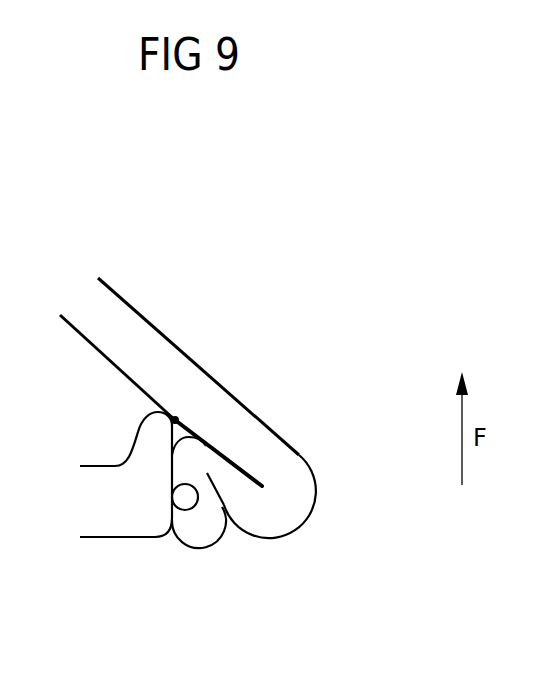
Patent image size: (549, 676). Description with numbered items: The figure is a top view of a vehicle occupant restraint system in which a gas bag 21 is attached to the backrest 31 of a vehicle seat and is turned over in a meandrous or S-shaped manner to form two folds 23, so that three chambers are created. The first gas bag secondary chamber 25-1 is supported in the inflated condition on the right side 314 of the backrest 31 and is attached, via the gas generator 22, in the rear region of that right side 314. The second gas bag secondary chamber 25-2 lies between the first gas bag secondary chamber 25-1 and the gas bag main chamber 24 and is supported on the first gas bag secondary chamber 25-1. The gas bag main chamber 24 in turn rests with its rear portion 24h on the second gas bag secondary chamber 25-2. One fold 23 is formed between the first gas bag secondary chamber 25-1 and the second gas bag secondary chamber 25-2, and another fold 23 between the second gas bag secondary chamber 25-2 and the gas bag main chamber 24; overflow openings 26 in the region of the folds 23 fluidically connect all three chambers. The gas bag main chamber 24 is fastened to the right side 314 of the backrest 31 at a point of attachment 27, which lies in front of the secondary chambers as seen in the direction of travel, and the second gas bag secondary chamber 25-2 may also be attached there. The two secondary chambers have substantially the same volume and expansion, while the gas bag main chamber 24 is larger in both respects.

The gas bag 21 is at (315, 497).
The gas generator 22 is at (185, 498).
The fold 23 is at (210, 480).
The gas bag main chamber 24 is at (138, 332).
The rear portion of the gas bag main chamber 24h is at (251, 435).
The first gas bag secondary chamber 25-1 is at (187, 467).
The second gas bag secondary chamber 25-2 is at (237, 500).
The overflow opening 26 is at (193, 448).
The point of attachment 27 is at (178, 416).
The backrest 31 is at (105, 480).
The right side 314 is at (170, 477).